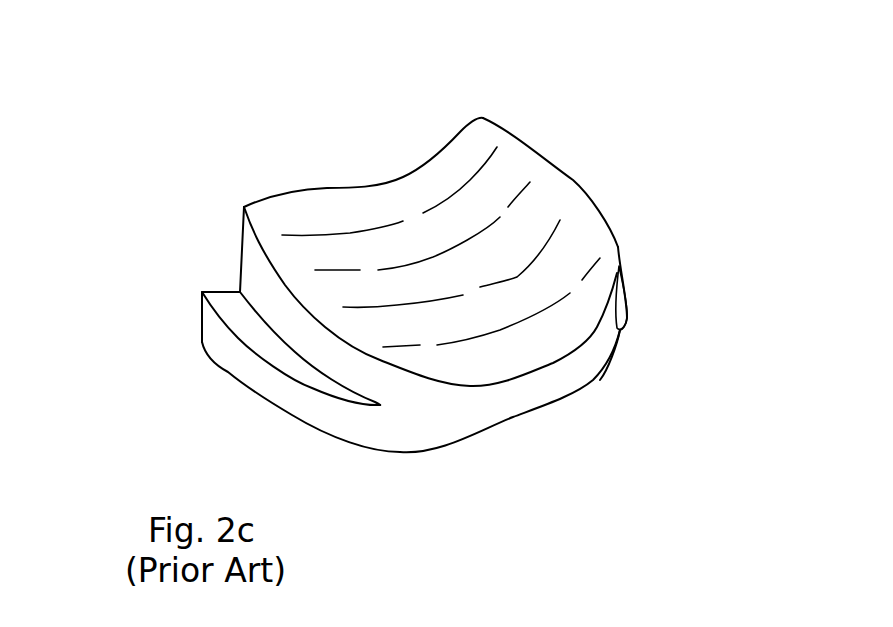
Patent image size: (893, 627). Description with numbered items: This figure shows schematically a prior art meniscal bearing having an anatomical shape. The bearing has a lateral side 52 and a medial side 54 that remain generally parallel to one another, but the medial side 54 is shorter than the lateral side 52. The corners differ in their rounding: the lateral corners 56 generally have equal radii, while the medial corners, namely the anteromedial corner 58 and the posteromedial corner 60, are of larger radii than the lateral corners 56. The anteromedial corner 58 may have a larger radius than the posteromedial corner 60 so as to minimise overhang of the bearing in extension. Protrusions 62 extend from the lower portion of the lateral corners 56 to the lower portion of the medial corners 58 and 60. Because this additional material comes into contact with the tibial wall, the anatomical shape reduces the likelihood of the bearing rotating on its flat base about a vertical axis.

The lateral side 52 is at (404, 177).
The medial side 54 is at (562, 388).
The lateral corners 56 is at (244, 207).
The anteromedial corner 58 is at (400, 413).
The posteromedial corner 60 is at (625, 320).
The protrusions 62 is at (210, 328).